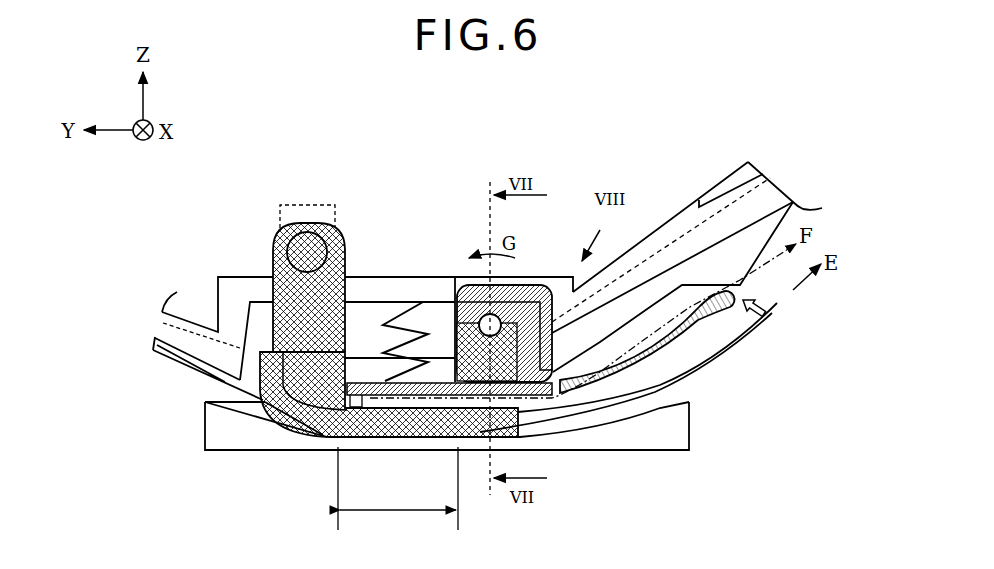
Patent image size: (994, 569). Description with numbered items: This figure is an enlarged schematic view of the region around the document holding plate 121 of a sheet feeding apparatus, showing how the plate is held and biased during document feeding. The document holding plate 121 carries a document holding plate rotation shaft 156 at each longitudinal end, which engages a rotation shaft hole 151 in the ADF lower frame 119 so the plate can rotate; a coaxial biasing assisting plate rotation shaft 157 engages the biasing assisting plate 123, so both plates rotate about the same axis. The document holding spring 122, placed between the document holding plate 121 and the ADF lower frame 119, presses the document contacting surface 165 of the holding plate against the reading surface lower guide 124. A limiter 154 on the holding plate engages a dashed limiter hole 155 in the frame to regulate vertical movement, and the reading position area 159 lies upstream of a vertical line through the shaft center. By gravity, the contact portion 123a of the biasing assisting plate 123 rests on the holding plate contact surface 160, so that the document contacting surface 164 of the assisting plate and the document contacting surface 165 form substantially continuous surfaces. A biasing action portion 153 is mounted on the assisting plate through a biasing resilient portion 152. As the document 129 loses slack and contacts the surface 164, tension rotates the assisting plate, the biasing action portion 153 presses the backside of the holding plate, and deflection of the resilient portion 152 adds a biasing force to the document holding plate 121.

The ADF lower frame 119 is at (212, 292).
The document holding plate 121 is at (203, 402).
The document holding spring 122 is at (383, 320).
The biasing assisting plate 123 is at (657, 340).
The contact portion 123a is at (567, 413).
The reading surface lower guide 124 is at (684, 452).
The document 129 is at (748, 316).
The rotation shaft hole 151 is at (447, 350).
The biasing resilient portion 152 is at (448, 337).
The biasing action portion 153 is at (323, 438).
The limiter 154 is at (278, 242).
The limiter hole 155 is at (293, 204).
The document holding plate rotation shaft 156 is at (659, 235).
The biasing assisting plate rotation shaft 157 is at (687, 247).
The reading position area 159 is at (398, 496).
The holding plate contact surface 160 is at (533, 417).
The document contacting surface 164 is at (677, 375).
The document contacting surface 165 is at (390, 436).